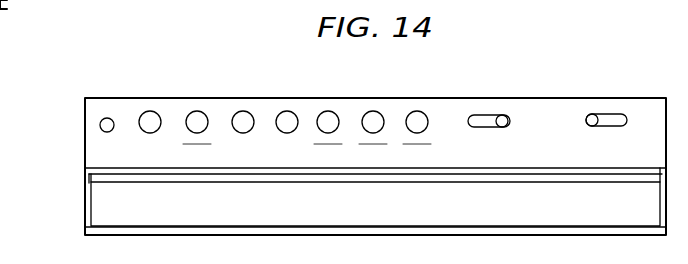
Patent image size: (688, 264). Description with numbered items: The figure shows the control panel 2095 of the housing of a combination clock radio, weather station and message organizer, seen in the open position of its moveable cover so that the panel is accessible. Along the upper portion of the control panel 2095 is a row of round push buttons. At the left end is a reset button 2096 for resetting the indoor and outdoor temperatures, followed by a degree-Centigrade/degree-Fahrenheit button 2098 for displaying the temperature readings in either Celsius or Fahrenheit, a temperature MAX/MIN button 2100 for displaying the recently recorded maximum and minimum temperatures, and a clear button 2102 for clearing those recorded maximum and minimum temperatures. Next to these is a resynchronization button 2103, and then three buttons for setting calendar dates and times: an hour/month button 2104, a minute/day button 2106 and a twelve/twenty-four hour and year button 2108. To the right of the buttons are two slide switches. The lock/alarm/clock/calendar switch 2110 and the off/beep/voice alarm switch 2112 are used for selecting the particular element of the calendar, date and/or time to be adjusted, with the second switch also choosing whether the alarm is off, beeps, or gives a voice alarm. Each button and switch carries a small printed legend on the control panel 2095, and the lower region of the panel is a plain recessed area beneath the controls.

The control panel 2095 is at (130, 98).
The reset button 2096 is at (100, 123).
The degree-Centigrade/degree-Fahrenheit button 2098 is at (158, 114).
The temperature MAX/MIN button 2100 is at (188, 131).
The clear button 2102 is at (251, 114).
The resynchronization button 2103 is at (277, 131).
The hour/month button 2104 is at (336, 114).
The minute/day button 2106 is at (381, 114).
The 12/24 Hr/Yr button 2108 is at (405, 131).
The lock/alarm/clock/calendar switch 2110 is at (503, 115).
The off/beep/voice alarm switch 2112 is at (592, 113).